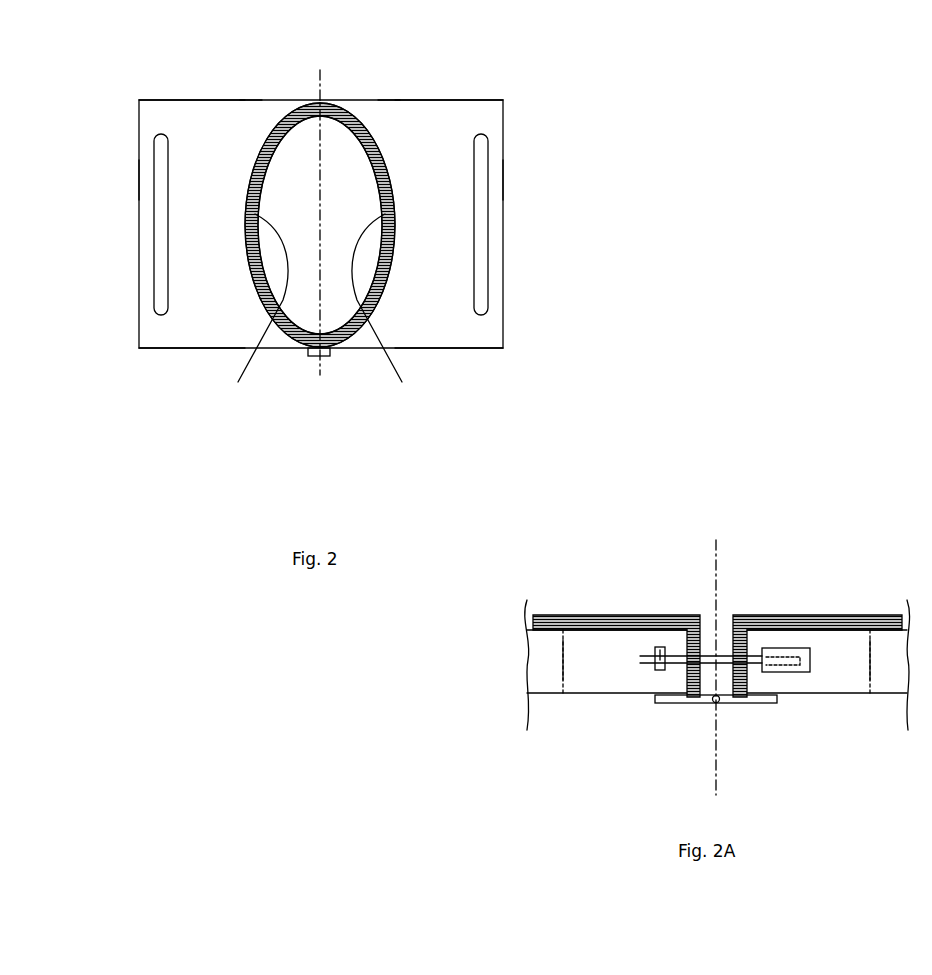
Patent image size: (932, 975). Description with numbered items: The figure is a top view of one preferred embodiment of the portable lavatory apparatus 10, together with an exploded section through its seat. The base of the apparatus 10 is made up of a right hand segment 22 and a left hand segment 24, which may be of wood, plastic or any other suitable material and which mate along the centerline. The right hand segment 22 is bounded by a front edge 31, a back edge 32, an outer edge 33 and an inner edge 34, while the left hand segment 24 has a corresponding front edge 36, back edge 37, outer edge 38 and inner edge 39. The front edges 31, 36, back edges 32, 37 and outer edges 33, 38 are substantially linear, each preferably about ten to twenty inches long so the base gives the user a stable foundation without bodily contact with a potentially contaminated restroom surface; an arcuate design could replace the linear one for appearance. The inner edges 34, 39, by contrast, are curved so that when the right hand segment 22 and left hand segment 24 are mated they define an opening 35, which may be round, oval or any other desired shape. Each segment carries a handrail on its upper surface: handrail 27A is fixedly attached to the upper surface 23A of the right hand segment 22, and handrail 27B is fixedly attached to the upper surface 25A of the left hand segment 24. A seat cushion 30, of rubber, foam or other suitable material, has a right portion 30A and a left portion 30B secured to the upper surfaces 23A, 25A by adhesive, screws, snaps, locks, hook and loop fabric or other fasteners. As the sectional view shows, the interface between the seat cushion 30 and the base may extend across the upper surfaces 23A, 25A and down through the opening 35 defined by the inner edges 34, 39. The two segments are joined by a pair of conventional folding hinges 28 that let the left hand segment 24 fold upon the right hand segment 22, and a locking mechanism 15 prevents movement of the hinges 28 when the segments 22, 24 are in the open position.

In FIG. 2, the portable lavatory apparatus 10 is at (105, 435).
In FIG. 2, the locking mechanism 15 is at (312, 358).
In FIG. 2A, the locking mechanism 15 is at (657, 648).
In FIG. 2, the right hand segment 22 is at (510, 226).
In FIG. 2A, the right hand segment 22 is at (800, 680).
In FIG. 2, the upper surface 23A is at (452, 130).
In FIG. 2, the left hand segment 24 is at (125, 228).
In FIG. 2A, the left hand segment 24 is at (623, 678).
In FIG. 2, the upper surface 25A is at (200, 130).
In FIG. 2, the handrail 27A is at (482, 196).
In FIG. 2, the handrail 27B is at (160, 193).
In FIG. 2A, the folding hinges 28 is at (770, 705).
In FIG. 2, the seat cushion 30 is at (345, 112).
In FIG. 2, the right portion 30A is at (396, 178).
In FIG. 2A, the right portion 30A is at (842, 613).
In FIG. 2, the left portion 30B is at (248, 177).
In FIG. 2A, the left portion 30B is at (593, 613).
In FIG. 2, the front edge 31 is at (455, 350).
In FIG. 2, the back edge 32 is at (390, 100).
In FIG. 2, the outer edge 33 is at (504, 182).
In FIG. 2, the inner edge 34 is at (402, 382).
In FIG. 2A, the inner edge 34 is at (868, 665).
In FIG. 2, the opening 35 is at (305, 155).
In FIG. 2, the front edge 36 is at (190, 350).
In FIG. 2, the back edge 37 is at (253, 100).
In FIG. 2, the outer edge 38 is at (138, 180).
In FIG. 2, the inner edge 39 is at (238, 382).
In FIG. 2A, the inner edge 39 is at (565, 660).